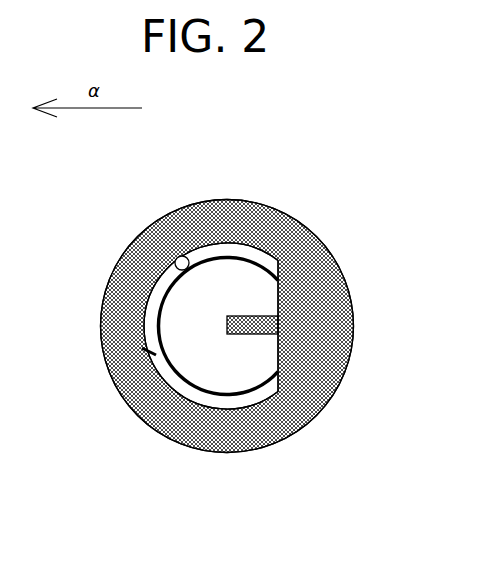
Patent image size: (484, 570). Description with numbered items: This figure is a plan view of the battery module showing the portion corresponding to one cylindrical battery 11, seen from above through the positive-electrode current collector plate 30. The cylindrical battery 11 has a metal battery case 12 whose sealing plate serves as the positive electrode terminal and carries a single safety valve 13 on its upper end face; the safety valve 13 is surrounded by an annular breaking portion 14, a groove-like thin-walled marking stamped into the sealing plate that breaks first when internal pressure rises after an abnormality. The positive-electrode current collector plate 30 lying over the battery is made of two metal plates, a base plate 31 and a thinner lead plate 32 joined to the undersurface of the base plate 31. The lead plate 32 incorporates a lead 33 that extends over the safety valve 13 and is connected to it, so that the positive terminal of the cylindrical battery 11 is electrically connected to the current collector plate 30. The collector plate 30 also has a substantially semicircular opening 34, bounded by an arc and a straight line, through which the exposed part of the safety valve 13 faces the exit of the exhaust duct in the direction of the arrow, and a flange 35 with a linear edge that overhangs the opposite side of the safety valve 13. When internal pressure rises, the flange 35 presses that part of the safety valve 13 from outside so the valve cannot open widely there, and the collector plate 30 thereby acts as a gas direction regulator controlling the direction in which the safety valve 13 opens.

The cylindrical battery 11 is at (114, 418).
The battery case 12 is at (152, 353).
The safety valve 13 is at (228, 374).
The annular breaking portion 14 is at (190, 378).
The positive-electrode current collector plate 30 is at (267, 351).
The base plate 31 is at (341, 309).
The lead plate 32 is at (244, 226).
The lead 33 is at (247, 326).
The opening 34 is at (174, 257).
The flange 35 is at (284, 333).